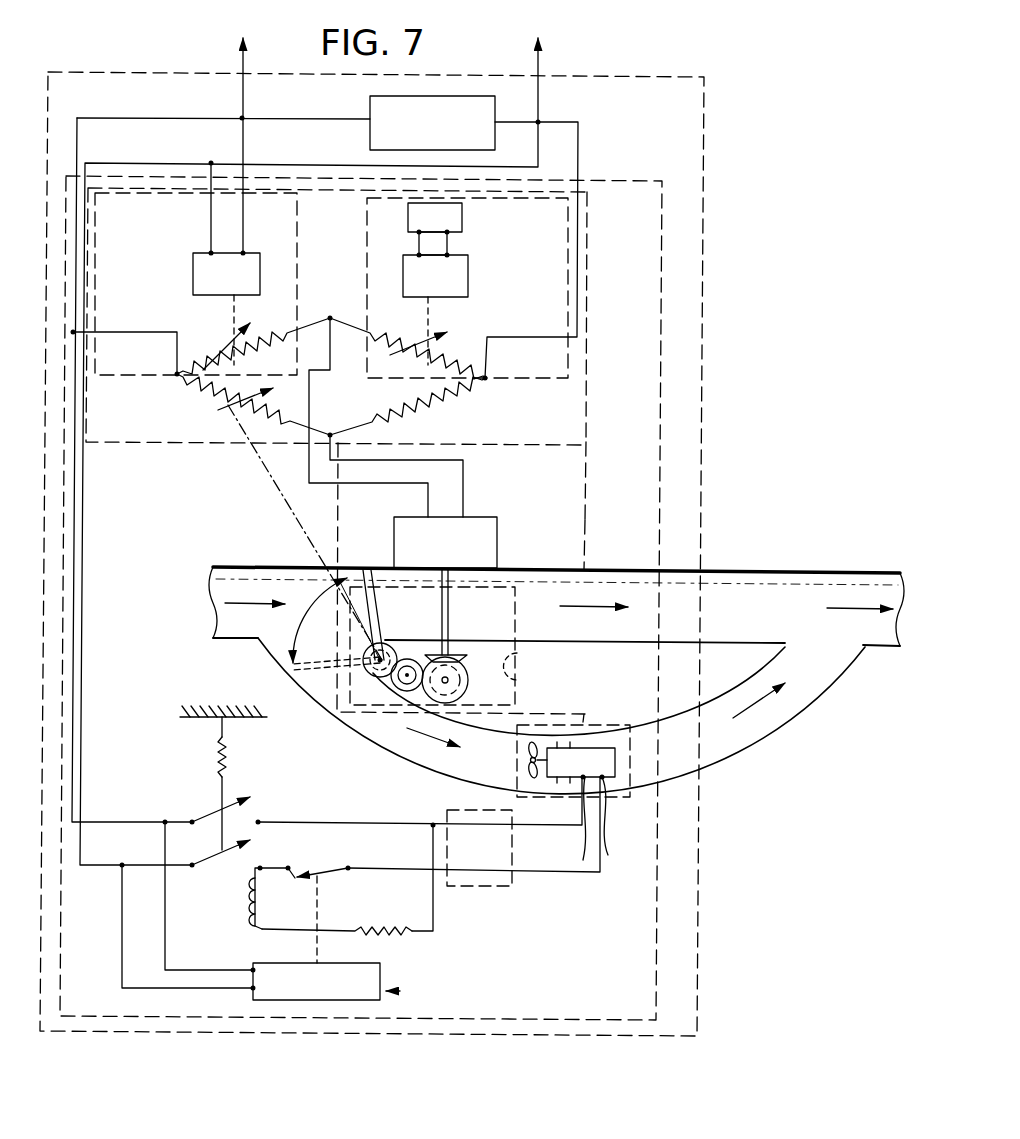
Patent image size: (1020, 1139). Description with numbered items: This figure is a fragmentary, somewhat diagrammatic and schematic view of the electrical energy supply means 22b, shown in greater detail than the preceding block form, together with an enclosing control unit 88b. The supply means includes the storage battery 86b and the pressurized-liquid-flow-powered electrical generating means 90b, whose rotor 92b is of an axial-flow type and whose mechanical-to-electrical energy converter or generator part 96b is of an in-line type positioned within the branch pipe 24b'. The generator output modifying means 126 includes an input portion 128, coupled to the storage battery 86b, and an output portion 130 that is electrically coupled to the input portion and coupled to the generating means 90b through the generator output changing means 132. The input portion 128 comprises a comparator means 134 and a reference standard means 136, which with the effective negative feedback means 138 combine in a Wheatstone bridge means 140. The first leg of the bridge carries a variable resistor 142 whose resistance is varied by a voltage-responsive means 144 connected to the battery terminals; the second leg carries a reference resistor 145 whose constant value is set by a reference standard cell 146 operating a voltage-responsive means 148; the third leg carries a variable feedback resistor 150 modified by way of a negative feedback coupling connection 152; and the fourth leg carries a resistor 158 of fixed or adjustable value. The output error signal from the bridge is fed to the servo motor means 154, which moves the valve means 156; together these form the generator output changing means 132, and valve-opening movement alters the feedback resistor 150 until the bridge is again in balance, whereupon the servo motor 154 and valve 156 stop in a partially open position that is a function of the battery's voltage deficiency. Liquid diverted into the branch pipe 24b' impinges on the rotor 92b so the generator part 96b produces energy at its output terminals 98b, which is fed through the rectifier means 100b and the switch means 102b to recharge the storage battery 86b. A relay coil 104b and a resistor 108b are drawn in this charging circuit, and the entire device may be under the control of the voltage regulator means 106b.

The electrical energy supply means 22b is at (708, 105).
The control unit 88b is at (667, 240).
The storage battery 86b is at (432, 123).
The comparator means 134 is at (97, 248).
The voltage-responsive means 144 is at (193, 279).
The reference standard cell 146 is at (462, 220).
The voltage-responsive means 148 is at (470, 279).
The reference standard means 136 is at (565, 376).
The variable resistor 142 is at (230, 340).
The reference resistor 145 is at (425, 345).
The variable feedback resistor 150 is at (222, 413).
The resistor 158 is at (420, 400).
The Wheatstone bridge means 140 is at (368, 417).
The effective negative feedback means 138 is at (258, 458).
The negative feedback coupling connection 152 is at (283, 500).
The input portion 128 is at (588, 400).
The generator output modifying means 126 is at (588, 494).
The output portion 130 is at (588, 560).
The servo motor means 154 is at (445, 542).
The valve means 156 is at (380, 607).
The generator output changing means 132 is at (518, 668).
The electrical generating means 90b is at (591, 718).
The rotor 92b is at (524, 770).
The electrical generator part 96b is at (620, 768).
The output terminals 98b is at (608, 855).
The rectifier means 100b is at (482, 888).
The branch pipe 24b' is at (574, 716).
The switch means 102b is at (205, 808).
The relay coil 104b is at (245, 923).
The resistor 108b is at (322, 878).
The voltage regulator means 106b is at (312, 910).